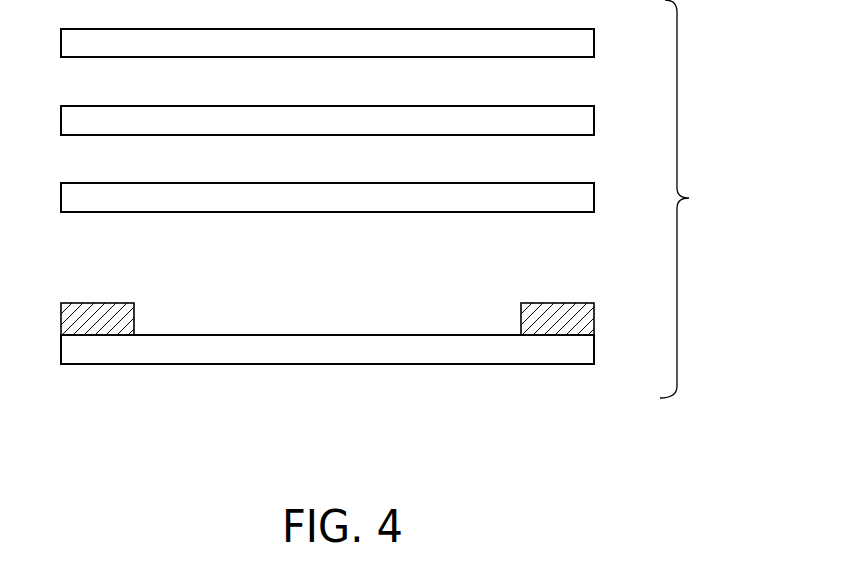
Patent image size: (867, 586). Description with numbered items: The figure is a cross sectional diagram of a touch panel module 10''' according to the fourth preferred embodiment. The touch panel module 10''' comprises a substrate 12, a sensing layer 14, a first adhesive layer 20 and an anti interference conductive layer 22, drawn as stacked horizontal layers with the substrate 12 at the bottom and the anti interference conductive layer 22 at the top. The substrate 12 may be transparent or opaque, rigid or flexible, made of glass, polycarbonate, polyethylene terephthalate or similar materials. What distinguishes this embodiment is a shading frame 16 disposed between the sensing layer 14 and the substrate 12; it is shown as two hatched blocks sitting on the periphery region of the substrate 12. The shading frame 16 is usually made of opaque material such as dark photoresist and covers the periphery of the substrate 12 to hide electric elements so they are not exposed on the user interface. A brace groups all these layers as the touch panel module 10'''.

The anti interference conductive layer 22 is at (595, 44).
The first adhesive layer 20 is at (595, 121).
The sensing layer 14 is at (595, 198).
The shading frame 16 is at (595, 314).
The substrate 12 is at (595, 352).
The touch panel module 10''' is at (704, 199).